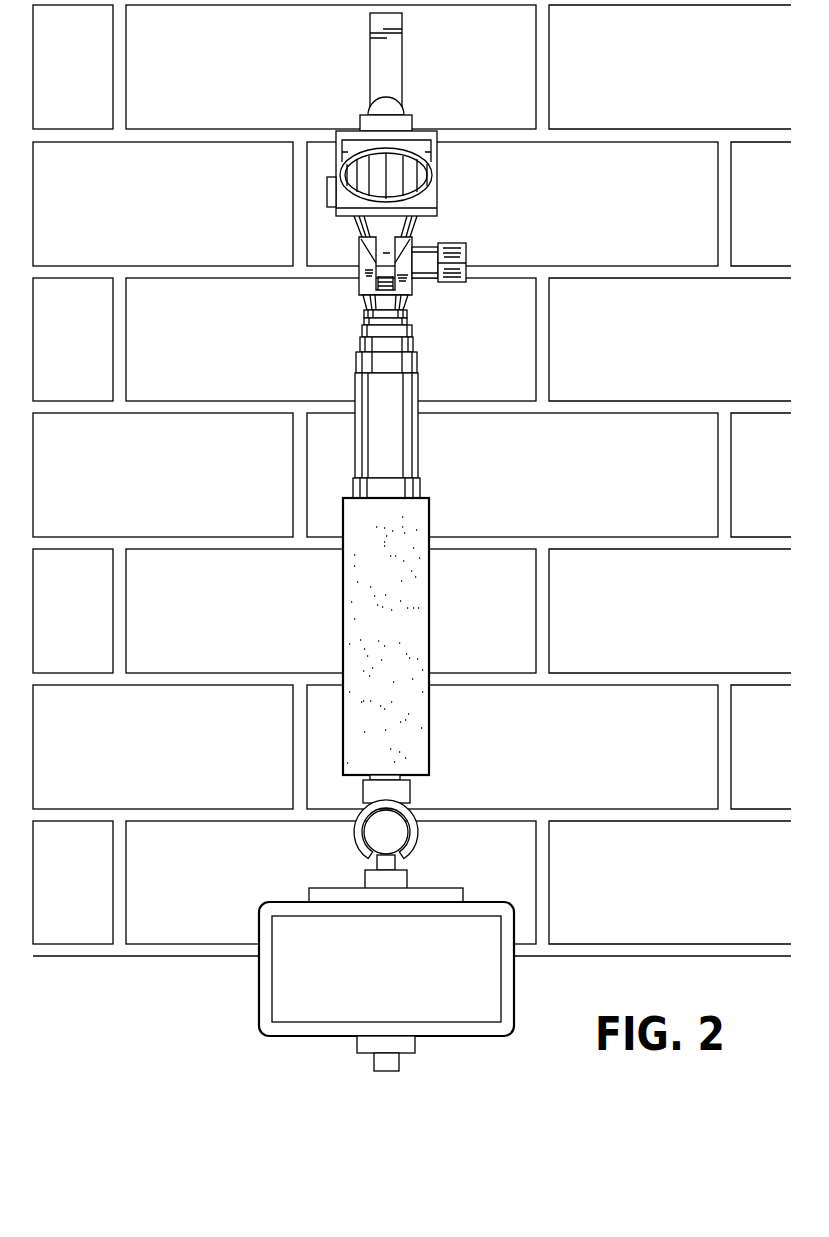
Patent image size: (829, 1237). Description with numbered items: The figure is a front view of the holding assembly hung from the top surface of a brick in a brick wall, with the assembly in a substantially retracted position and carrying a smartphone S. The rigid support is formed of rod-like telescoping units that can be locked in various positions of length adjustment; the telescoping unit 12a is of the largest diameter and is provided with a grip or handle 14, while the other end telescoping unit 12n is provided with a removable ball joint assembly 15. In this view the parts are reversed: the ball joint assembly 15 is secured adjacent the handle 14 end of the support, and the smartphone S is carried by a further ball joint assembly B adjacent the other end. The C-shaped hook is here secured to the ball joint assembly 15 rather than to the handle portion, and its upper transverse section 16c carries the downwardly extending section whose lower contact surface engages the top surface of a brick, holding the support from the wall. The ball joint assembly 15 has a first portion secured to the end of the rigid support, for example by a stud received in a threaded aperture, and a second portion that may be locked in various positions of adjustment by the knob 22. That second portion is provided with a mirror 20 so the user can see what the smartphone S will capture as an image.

The upper transverse section 16c is at (370, 58).
The mirror 20 is at (387, 176).
The ball joint assembly 15 is at (384, 268).
The knob 22 is at (466, 252).
The telescoping unit 12n is at (365, 318).
The telescoping unit 12a is at (353, 488).
The grip or handle 14 is at (343, 618).
The ball joint B is at (386, 832).
The smartphone S is at (259, 912).